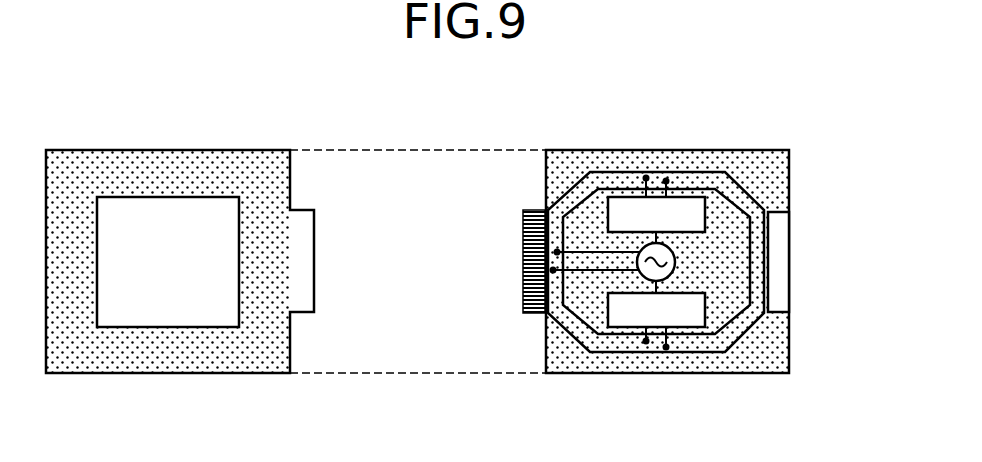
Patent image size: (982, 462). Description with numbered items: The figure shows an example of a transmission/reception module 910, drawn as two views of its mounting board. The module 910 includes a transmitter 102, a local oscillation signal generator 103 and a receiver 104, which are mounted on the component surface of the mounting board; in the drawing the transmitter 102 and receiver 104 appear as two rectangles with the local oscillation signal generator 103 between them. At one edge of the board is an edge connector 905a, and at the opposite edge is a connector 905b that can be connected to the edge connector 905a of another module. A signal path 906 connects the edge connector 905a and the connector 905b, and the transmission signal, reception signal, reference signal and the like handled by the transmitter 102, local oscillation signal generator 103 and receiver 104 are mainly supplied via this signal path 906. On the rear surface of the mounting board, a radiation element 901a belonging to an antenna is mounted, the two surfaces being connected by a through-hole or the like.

The transmission/reception module 910 is at (75, 149).
The radiation element 901a is at (169, 218).
The transmitter 102 is at (607, 215).
The local oscillation signal generator 103 is at (675, 258).
The receiver 104 is at (607, 313).
The edge connector 905a is at (522, 261).
The connector 905b is at (790, 261).
The signal path 906 is at (738, 328).